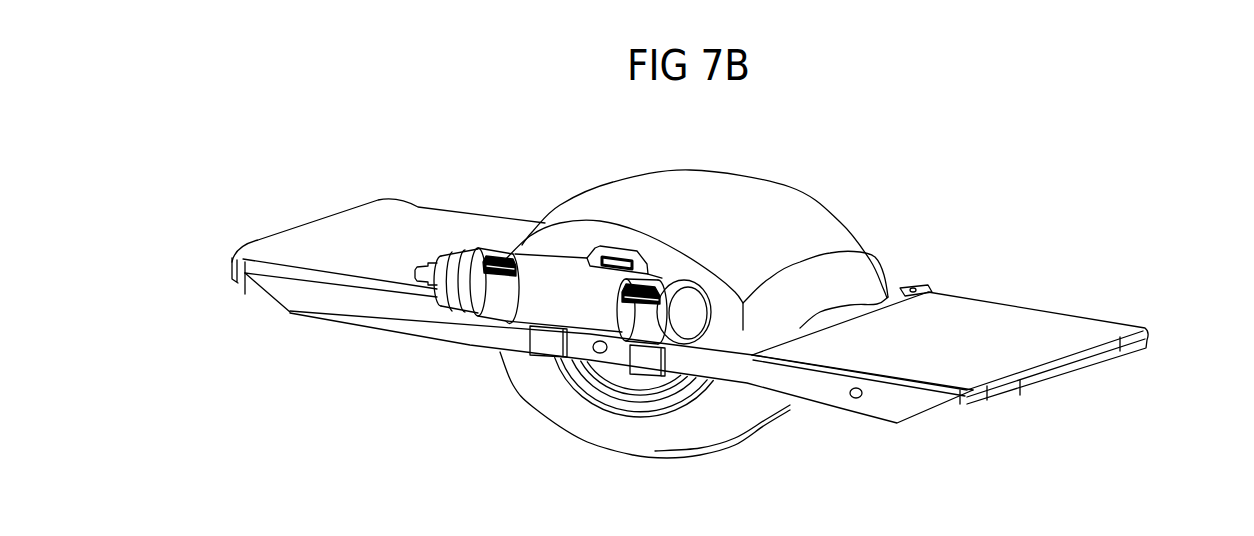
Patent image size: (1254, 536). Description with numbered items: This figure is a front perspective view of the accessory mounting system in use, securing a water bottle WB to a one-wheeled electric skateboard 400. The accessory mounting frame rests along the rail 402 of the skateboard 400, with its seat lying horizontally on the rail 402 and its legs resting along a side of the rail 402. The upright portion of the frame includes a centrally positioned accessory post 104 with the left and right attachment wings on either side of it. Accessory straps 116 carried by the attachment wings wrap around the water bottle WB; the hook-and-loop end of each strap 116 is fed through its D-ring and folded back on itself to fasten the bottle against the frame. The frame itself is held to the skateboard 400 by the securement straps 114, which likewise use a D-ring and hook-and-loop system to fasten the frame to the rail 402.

The wireless bridge module WB is at (557, 283).
The accessory post 104 is at (593, 250).
The accessory straps 116 is at (647, 360).
The securement strap 114 is at (680, 377).
The one wheeled electric skateboard 400 is at (887, 230).
The rail 402 is at (803, 380).